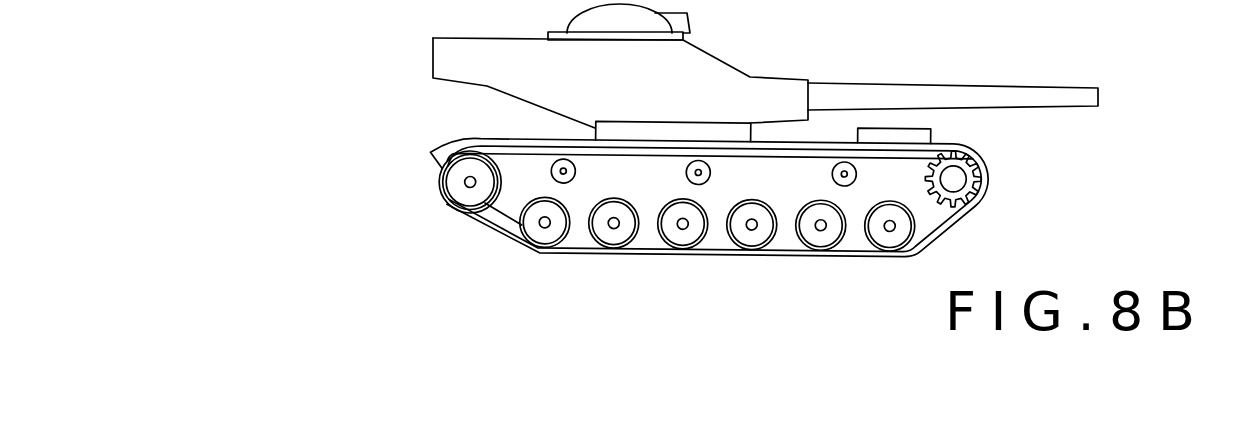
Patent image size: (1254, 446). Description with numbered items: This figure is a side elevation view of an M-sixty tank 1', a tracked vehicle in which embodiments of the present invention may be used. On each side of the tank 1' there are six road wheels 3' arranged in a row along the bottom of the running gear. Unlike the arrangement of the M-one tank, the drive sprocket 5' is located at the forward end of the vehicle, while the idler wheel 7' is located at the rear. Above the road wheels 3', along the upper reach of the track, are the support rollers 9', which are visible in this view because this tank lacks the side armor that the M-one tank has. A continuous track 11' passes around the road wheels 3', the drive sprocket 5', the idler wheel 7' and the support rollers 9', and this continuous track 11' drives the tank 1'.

The M-60 tank 1' is at (688, 83).
The road wheels 3' is at (704, 246).
The drive sprocket 5' is at (990, 183).
The idler wheel 7' is at (447, 201).
The support rollers 9' is at (768, 230).
The continuous track 11' is at (708, 220).